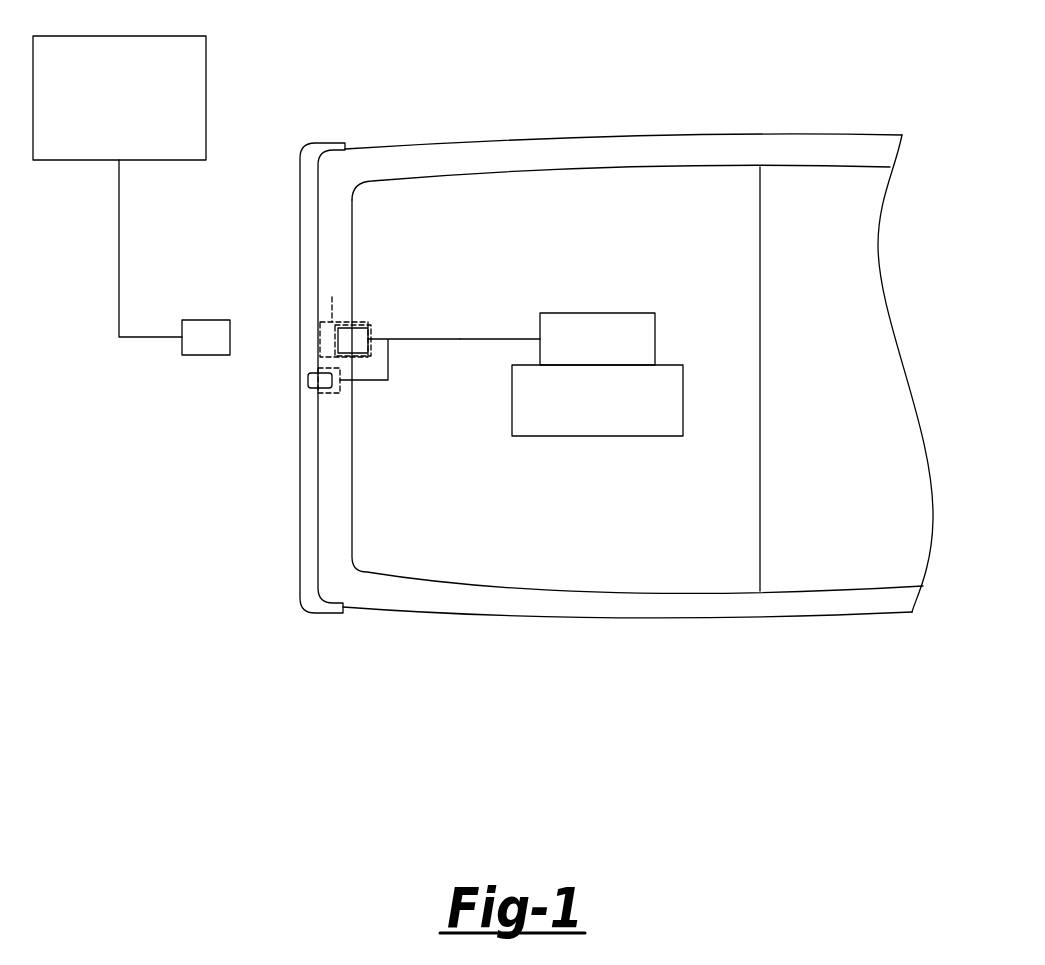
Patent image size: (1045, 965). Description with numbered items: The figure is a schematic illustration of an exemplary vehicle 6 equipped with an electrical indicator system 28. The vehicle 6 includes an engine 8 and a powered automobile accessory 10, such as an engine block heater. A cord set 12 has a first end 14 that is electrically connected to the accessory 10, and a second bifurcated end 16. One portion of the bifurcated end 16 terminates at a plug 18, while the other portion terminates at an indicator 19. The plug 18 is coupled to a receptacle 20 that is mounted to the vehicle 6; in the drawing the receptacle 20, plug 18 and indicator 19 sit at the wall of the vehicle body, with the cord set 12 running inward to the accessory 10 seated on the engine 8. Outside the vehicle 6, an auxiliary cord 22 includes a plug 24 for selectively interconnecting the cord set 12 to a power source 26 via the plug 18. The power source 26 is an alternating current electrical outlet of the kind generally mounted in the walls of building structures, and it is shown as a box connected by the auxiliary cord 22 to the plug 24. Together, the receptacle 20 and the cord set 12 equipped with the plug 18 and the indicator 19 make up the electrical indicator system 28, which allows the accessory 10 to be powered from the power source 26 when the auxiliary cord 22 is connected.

The vehicle 6 is at (755, 95).
The engine 8 is at (672, 427).
The powered automobile accessory 10 is at (600, 318).
The cord set 12 is at (455, 352).
The first end 14 is at (512, 330).
The second bifurcated end 16 is at (296, 320).
The plug 18 is at (358, 320).
The indicator 19 is at (300, 410).
The receptacle 20 is at (332, 305).
The auxiliary cord 22 is at (110, 282).
The plug 24 is at (195, 358).
The power source 26 is at (206, 53).
The electrical indicator system 28 is at (373, 245).